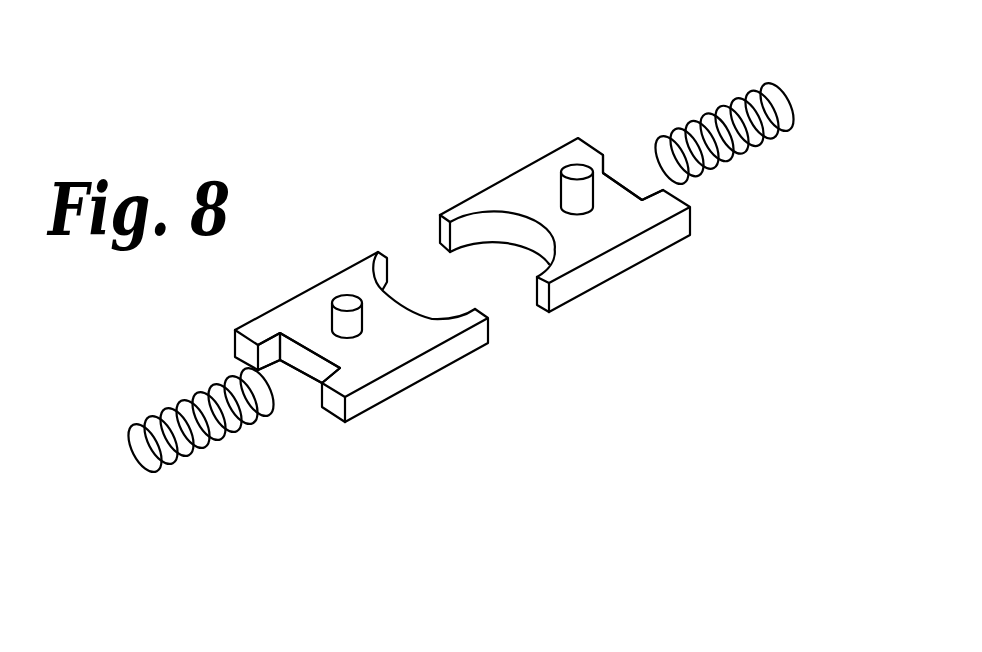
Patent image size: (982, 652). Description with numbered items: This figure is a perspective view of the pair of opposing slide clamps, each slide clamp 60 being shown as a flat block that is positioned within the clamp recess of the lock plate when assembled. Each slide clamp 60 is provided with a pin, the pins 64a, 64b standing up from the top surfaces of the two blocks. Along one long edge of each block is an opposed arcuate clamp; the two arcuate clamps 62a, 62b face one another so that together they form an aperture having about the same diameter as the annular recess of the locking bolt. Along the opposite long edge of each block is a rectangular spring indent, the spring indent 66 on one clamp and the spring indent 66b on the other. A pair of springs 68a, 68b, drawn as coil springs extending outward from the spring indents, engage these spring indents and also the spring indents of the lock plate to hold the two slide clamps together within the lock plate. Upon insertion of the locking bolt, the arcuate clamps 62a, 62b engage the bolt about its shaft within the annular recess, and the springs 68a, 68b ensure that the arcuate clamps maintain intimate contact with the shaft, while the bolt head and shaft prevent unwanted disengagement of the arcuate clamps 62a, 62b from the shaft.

The slide clamp 60 is at (632, 250).
The arcuate clamp 62a is at (472, 238).
The arcuate clamp 62b is at (373, 280).
The pin 64a is at (573, 189).
The pin 64b is at (343, 311).
The spring indent 66 is at (630, 190).
The spring indent 66b is at (308, 361).
The spring 68a is at (781, 107).
The spring 68b is at (153, 458).